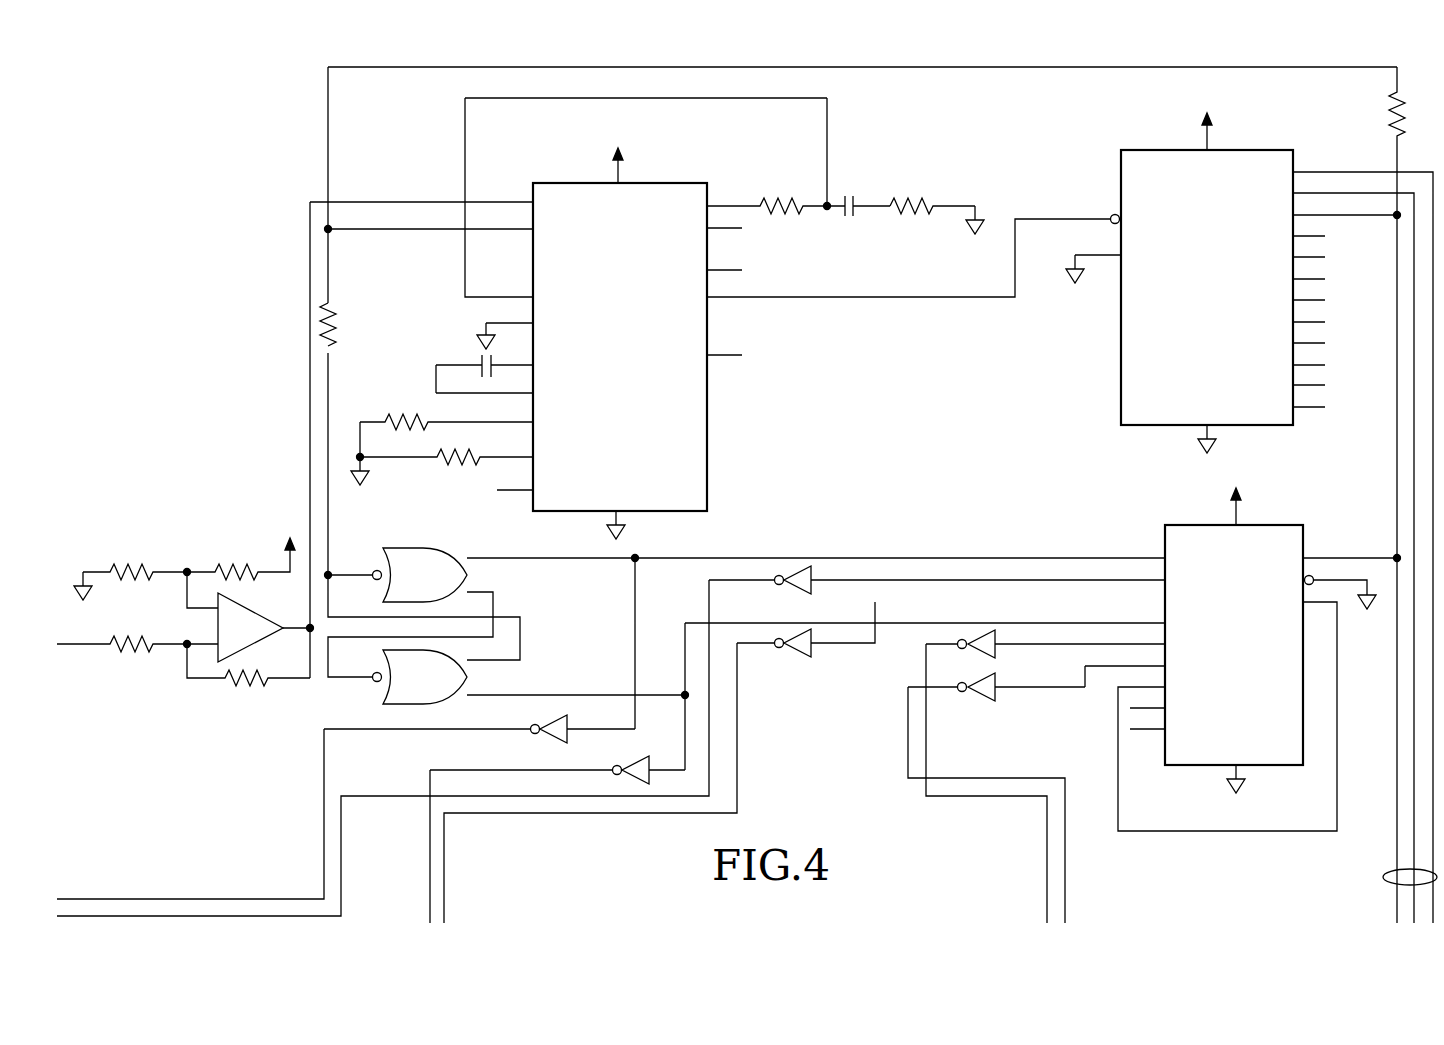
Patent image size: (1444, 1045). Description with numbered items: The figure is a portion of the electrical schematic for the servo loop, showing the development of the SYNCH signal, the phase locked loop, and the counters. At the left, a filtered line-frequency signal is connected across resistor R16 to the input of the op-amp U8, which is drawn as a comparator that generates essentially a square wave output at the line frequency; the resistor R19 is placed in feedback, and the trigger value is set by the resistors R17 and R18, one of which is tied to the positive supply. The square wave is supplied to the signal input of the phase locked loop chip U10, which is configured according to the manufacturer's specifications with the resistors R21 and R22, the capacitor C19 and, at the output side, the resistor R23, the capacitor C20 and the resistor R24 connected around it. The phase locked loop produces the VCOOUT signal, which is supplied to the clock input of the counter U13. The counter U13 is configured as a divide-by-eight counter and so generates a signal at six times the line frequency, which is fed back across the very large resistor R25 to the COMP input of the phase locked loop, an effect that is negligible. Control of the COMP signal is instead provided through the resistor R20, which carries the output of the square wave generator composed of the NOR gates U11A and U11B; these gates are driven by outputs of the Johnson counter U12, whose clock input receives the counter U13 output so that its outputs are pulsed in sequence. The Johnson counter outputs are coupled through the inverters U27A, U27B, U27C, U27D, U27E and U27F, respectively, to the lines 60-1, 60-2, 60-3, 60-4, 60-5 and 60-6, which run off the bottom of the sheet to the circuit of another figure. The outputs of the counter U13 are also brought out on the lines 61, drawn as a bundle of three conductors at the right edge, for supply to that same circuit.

The resistor R16 is at (153, 655).
The resistor R17 is at (142, 572).
The resistor R18 is at (248, 572).
The resistor R19 is at (260, 687).
The resistor R20 is at (340, 311).
The resistor R21 is at (402, 413).
The resistor R22 is at (465, 465).
The resistor R23 is at (784, 193).
The resistor R24 is at (922, 192).
The resistor R25 is at (1410, 100).
The capacitor C19 is at (477, 360).
The capacitor C20 is at (858, 191).
The op-amp U8 is at (248, 617).
The phase locked loop chip U10 is at (619, 332).
The NOR gate U11A is at (758, 569).
The NOR gate U11B is at (518, 671).
The Johnson counter U12 is at (1253, 627).
The counter U13 is at (1195, 270).
The inverter U27A is at (526, 753).
The inverter U27B is at (796, 572).
The inverter U27C is at (791, 656).
The inverter U27D is at (640, 782).
The inverter U27E is at (1012, 650).
The inverter U27F is at (984, 702).
The line 60-1 is at (164, 897).
The line 60-2 is at (208, 913).
The line 60-3 is at (446, 856).
The line 60-4 is at (428, 889).
The line 60-5 is at (1066, 886).
The line 60-6 is at (1046, 875).
The lines 61 is at (1384, 870).